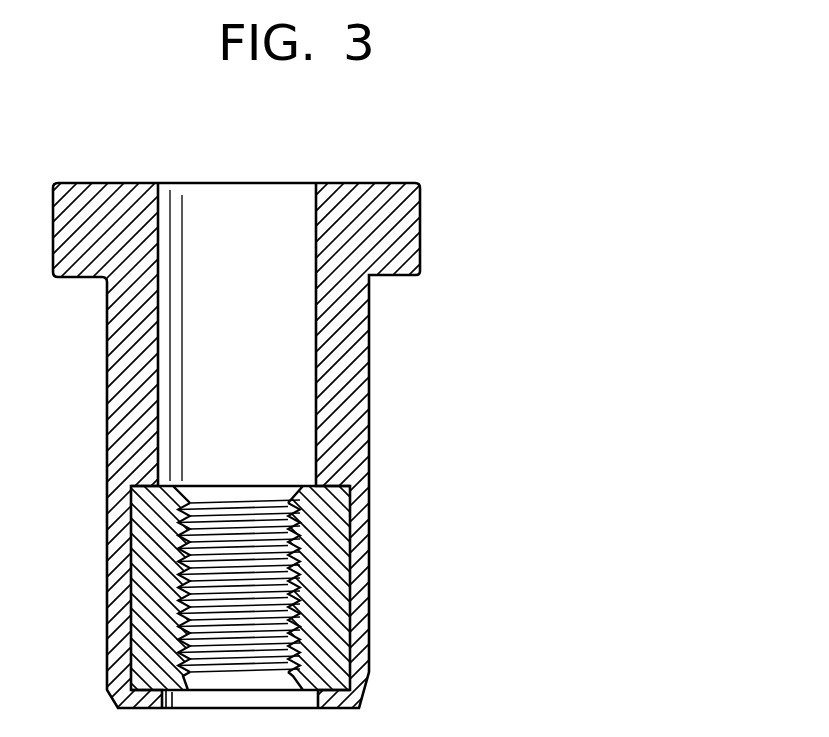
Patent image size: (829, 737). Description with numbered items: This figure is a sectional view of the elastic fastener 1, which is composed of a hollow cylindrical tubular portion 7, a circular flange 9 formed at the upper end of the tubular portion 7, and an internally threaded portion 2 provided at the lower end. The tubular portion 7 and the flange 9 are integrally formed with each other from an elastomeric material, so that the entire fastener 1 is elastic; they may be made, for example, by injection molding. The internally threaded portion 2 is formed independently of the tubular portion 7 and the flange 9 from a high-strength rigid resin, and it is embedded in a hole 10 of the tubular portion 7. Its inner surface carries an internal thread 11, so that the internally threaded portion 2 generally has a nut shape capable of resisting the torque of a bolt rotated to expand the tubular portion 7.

The elastic fastener 1 is at (404, 174).
The circular flange 9 is at (421, 222).
The hollow cylindrical portion 7 is at (370, 352).
The internally threaded portion 2 is at (325, 635).
The hole 10 is at (340, 574).
The internal thread 11 is at (172, 547).